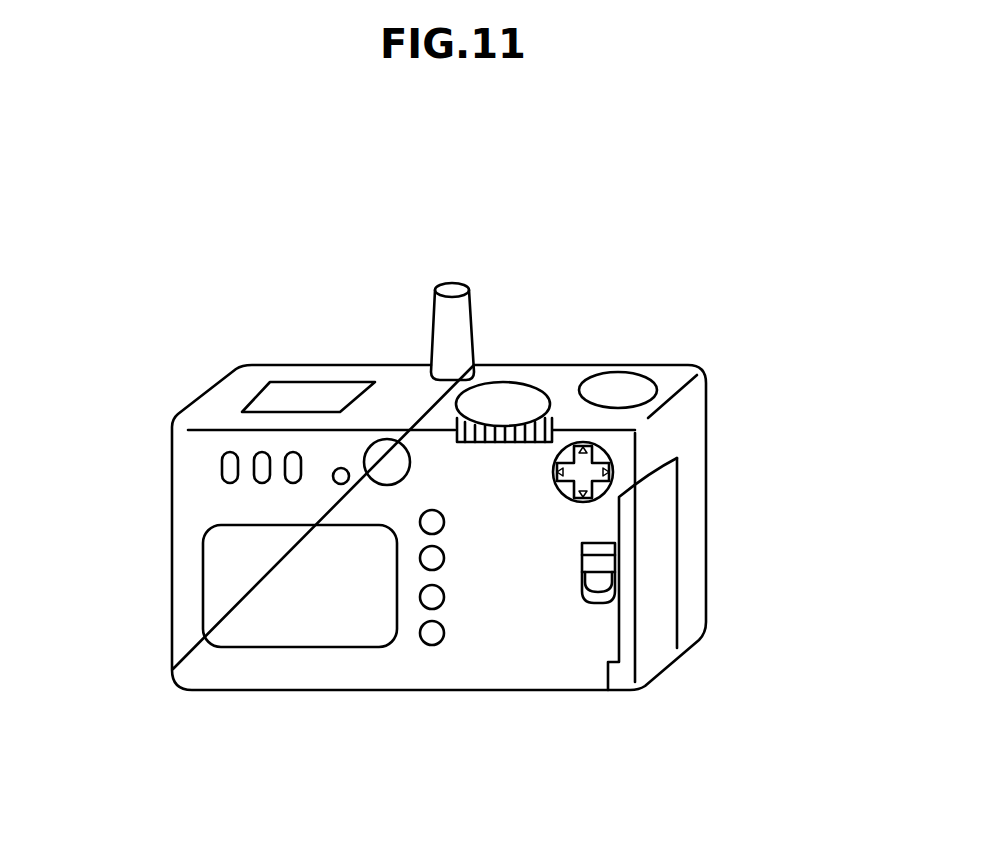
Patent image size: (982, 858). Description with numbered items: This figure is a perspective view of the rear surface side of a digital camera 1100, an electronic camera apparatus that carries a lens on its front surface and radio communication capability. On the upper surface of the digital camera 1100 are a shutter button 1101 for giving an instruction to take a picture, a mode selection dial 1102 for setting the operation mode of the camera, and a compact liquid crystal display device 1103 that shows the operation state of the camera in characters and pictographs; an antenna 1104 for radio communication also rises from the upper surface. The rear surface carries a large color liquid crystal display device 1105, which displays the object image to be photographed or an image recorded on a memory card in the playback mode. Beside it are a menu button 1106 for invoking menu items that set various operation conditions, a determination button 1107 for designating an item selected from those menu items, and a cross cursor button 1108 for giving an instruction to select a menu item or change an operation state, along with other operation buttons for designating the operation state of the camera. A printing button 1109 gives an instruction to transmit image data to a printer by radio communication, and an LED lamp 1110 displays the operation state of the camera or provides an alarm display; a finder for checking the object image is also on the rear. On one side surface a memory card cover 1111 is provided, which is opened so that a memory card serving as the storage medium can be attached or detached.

The digital camera 1100 is at (708, 488).
The shutter button 1101 is at (623, 383).
The mode selection dial 1102 is at (515, 395).
The compact liquid crystal display device 1103 is at (305, 395).
The antenna 1104 is at (452, 288).
The color liquid crystal display device 1105 is at (287, 627).
The menu button 1106 is at (438, 560).
The determination button 1107 is at (440, 603).
The cross cursor button 1108 is at (570, 490).
The printing button 1109 is at (232, 471).
The LED lamp 1110 is at (338, 481).
The memory card cover 1111 is at (678, 583).